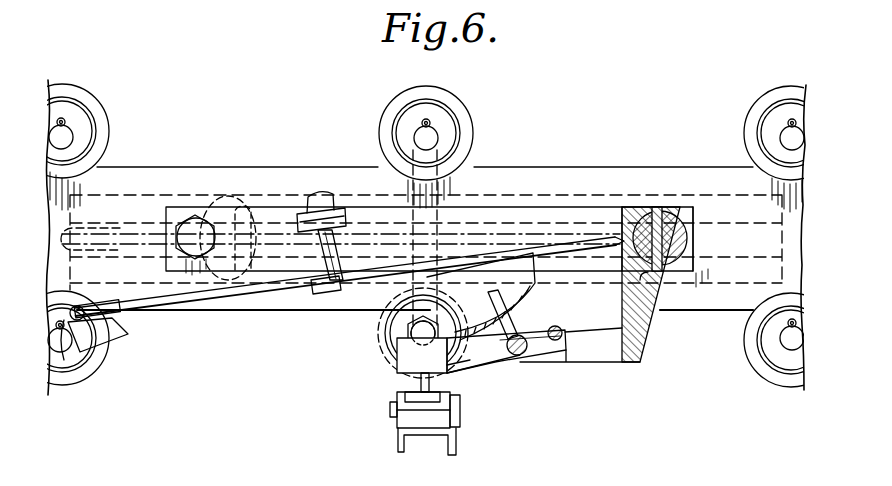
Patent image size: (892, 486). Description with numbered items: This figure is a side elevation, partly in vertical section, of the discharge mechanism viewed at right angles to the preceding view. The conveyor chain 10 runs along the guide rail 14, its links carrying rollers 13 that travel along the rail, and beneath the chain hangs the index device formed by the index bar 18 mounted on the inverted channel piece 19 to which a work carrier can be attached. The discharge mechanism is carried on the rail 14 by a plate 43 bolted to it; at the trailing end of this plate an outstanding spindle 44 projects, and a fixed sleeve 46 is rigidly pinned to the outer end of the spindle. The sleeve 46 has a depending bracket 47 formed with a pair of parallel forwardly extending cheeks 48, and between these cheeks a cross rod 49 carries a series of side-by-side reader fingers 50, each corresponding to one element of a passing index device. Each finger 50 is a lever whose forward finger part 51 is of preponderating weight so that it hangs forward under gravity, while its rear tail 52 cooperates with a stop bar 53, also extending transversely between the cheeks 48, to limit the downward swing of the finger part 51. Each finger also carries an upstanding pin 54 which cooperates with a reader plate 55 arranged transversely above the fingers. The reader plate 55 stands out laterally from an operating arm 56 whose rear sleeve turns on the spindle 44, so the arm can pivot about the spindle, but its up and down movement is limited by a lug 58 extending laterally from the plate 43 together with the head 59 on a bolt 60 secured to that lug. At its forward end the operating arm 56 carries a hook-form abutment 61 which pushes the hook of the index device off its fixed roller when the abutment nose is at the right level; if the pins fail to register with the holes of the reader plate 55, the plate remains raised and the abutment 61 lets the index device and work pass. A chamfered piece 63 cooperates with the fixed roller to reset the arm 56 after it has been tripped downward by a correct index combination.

The conveyor chain 10 is at (498, 193).
The rollers 13 is at (101, 132).
The guide rail 14 is at (238, 167).
The index bar 18 is at (405, 417).
The channel piece 19 is at (400, 445).
The plate 43 is at (532, 207).
The spindle 44 is at (670, 205).
The fixed sleeve 46 is at (686, 238).
The bracket 47 is at (638, 333).
The cheeks 48 is at (608, 350).
The cross rod 49 is at (520, 356).
The reader fingers 50 is at (497, 357).
The finger part 51 is at (398, 362).
The tail 52 is at (552, 352).
The stop bar 53 is at (563, 333).
The upstanding pin 54 is at (509, 290).
The reader plate 55 is at (535, 300).
The operating arm 56 is at (223, 302).
The lug 58 is at (340, 203).
The head 59 is at (410, 335).
The bolt 60 is at (316, 276).
The hook-form abutment 61 is at (123, 316).
The chamfered piece 63 is at (102, 323).